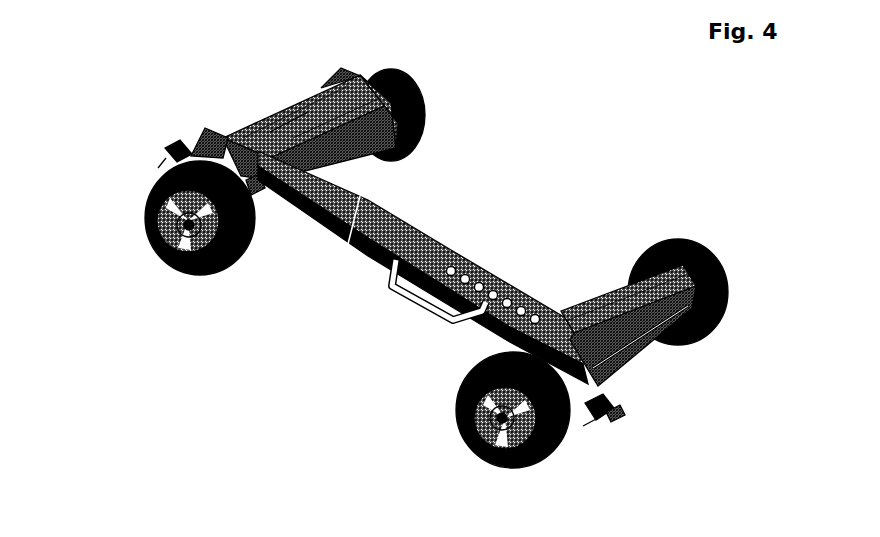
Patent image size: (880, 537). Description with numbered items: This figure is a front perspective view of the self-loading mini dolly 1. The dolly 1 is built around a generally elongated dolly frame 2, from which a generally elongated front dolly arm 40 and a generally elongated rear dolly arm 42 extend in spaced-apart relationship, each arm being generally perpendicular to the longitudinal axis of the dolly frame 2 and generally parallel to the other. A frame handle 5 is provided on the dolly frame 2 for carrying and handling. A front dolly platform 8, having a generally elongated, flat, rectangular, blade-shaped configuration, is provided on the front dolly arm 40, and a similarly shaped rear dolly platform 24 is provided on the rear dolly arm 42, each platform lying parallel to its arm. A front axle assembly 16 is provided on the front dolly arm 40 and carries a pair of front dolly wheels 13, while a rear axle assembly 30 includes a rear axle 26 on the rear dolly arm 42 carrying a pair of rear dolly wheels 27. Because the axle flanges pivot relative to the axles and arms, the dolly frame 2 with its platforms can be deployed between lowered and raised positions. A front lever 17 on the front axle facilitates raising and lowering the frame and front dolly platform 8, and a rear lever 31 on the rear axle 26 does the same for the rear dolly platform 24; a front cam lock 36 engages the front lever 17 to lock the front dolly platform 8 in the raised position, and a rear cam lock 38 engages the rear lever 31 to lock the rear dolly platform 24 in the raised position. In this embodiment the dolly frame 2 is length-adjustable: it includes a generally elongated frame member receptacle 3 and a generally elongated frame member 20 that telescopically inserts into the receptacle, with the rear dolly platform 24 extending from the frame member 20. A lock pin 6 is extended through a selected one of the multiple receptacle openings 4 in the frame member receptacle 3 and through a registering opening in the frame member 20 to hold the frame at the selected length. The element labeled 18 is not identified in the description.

The self-loading mini dolly 1 is at (532, 121).
The dolly frame 2 is at (347, 266).
The frame member receptacle 3 is at (415, 235).
The receptacle openings 4 is at (540, 305).
The frame handle 5 is at (417, 303).
The lock pin 6 is at (447, 259).
The front dolly platform 8 is at (603, 267).
The front dolly wheels 13 is at (667, 230).
The front axle assembly 16 is at (584, 430).
The front lever 17 is at (603, 413).
The rear cross rod 18 is at (630, 332).
The frame member 20 is at (330, 216).
The rear dolly platform 24 is at (363, 150).
The rear axle 26 is at (247, 190).
The rear dolly wheels 27 is at (140, 214).
The rear axle assembly 30 is at (146, 160).
The rear lever 31 is at (157, 142).
The front cam lock 36 is at (612, 392).
The rear cam lock 38 is at (187, 125).
The front dolly arm 40 is at (612, 345).
The rear dolly arm 42 is at (280, 118).